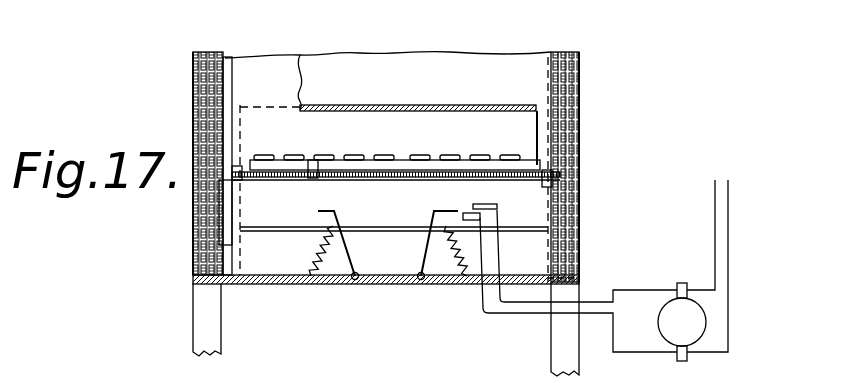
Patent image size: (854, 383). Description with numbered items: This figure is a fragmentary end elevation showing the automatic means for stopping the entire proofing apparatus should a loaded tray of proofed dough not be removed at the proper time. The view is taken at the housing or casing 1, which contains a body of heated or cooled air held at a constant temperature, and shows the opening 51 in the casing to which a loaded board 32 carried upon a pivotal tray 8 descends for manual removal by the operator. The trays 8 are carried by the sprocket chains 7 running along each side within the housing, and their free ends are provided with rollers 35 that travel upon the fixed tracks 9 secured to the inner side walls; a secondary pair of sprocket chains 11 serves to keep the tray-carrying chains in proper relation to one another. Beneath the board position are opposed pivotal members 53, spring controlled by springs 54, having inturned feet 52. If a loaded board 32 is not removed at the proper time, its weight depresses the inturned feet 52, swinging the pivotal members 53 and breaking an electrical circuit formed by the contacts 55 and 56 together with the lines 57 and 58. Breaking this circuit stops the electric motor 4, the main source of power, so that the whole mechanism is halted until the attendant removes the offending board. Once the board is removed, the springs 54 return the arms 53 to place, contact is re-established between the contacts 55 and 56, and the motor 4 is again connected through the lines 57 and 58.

The housing or casing 1 is at (193, 208).
The electric motor 4 is at (693, 270).
The sprocket chains 7 is at (222, 58).
The pivotal trays 8 is at (359, 186).
The tracks 9 is at (226, 85).
The sprocket chains 11 is at (212, 42).
The board 32 is at (422, 144).
The rollers 35 is at (226, 162).
The opening 51 is at (361, 121).
The inturned feet 52 is at (394, 229).
The pivotal members 53 is at (438, 238).
The springs 54 is at (313, 256).
The contact 55 is at (493, 196).
The contact 56 is at (482, 217).
The line 57 is at (520, 300).
The line 58 is at (540, 313).